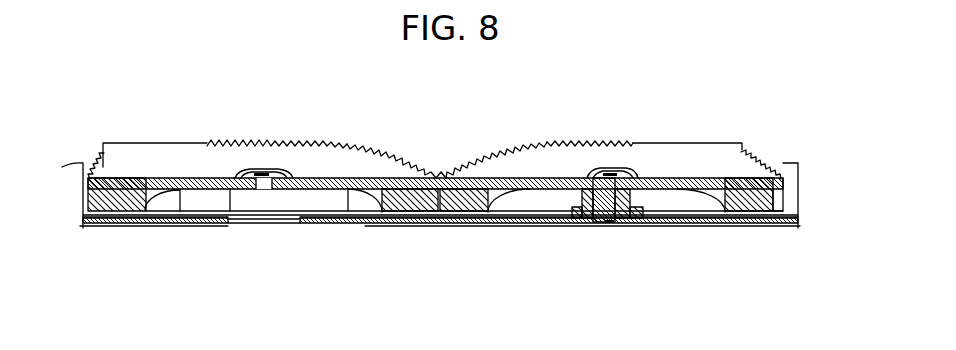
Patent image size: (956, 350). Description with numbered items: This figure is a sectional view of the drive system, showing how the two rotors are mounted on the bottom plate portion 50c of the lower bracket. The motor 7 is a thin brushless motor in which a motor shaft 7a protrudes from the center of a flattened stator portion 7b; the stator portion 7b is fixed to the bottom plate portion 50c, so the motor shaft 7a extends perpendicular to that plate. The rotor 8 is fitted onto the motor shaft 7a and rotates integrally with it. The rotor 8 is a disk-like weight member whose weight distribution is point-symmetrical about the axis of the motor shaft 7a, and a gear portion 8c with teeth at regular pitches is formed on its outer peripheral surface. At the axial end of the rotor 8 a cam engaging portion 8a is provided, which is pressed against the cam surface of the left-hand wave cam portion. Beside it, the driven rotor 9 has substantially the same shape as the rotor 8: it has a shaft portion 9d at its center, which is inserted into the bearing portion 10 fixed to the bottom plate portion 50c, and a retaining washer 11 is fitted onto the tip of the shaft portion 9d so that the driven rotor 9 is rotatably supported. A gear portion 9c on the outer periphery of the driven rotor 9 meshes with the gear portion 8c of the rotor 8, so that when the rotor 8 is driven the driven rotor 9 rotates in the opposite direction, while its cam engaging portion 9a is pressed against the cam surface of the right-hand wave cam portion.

The motor 7 is at (317, 270).
The motor shaft 7a is at (262, 190).
The stator portion 7b is at (365, 217).
The rotor 8 is at (213, 150).
The cam engaging portion 8a is at (290, 168).
The gear portion 8c is at (365, 148).
The driven rotor 9 is at (620, 153).
The cam engaging portion 9a is at (600, 172).
The gear portion 9c is at (493, 147).
The shaft portion 9d is at (585, 215).
The bearing portion 10 is at (628, 193).
The retaining washer 11 is at (612, 220).
The bottom plate portion 50c is at (788, 163).